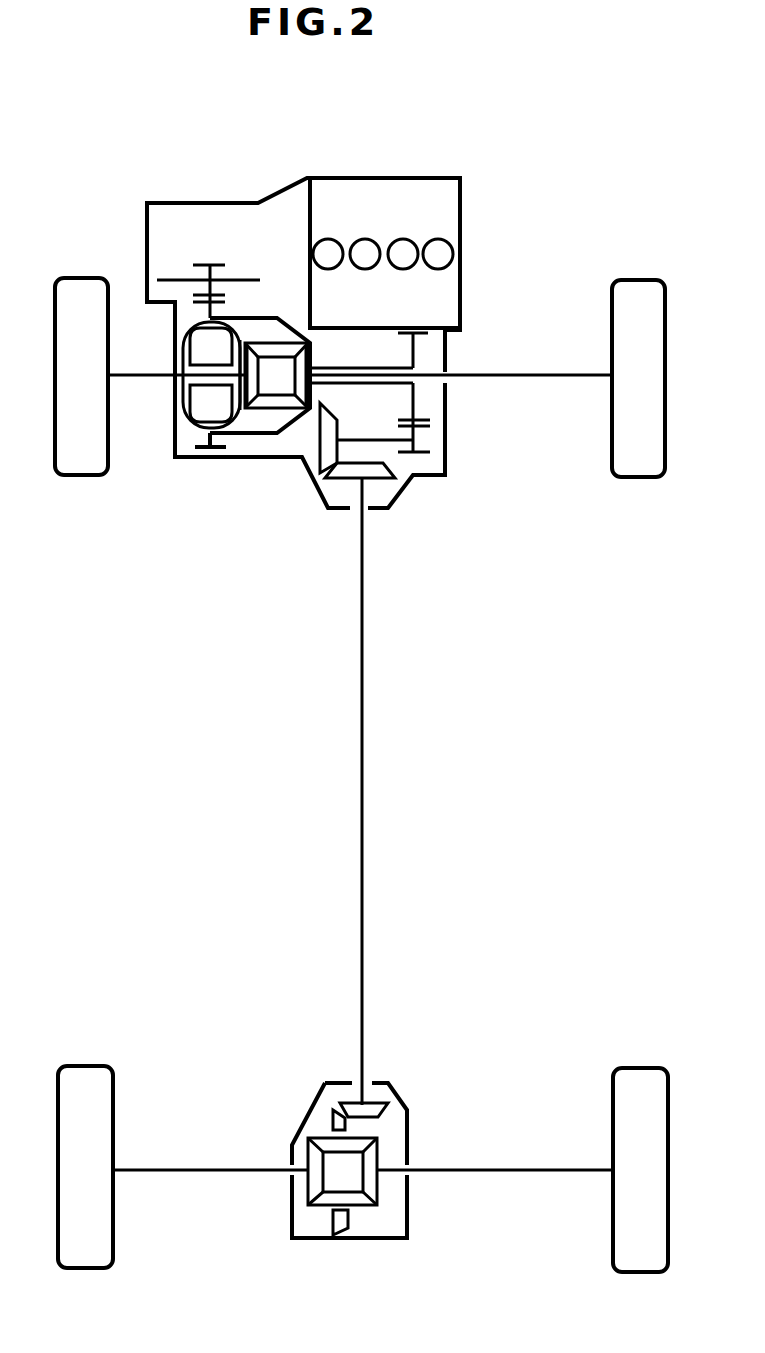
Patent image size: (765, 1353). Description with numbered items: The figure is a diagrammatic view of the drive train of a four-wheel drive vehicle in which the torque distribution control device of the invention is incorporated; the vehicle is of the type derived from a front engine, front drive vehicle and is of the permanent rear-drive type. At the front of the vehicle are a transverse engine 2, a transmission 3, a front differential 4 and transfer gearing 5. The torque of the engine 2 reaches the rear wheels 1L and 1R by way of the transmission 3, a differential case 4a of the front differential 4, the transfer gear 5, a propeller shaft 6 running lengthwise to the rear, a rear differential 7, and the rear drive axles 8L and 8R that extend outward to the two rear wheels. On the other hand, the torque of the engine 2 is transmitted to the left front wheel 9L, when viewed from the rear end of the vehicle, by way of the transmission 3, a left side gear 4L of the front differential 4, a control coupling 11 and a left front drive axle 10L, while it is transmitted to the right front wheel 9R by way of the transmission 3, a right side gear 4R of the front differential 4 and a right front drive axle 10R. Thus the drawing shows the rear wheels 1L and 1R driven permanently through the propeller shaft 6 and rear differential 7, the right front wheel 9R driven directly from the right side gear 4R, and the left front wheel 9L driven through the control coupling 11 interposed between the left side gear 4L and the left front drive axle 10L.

The rear wheel 1L is at (85, 1066).
The rear wheel 1R is at (635, 1068).
The transverse engine 2 is at (407, 197).
The transmission 3 is at (207, 218).
The front differential 4 is at (290, 448).
The left side gear 4L is at (252, 405).
The right side gear 4R is at (338, 372).
The differential case 4a is at (292, 432).
The transfer gearing 5 is at (424, 355).
The propeller shaft 6 is at (363, 727).
The rear differential 7 is at (365, 1210).
The rear drive axle 8L is at (195, 1169).
The rear drive axle 8R is at (505, 1169).
The left front wheel 9L is at (80, 277).
The right front wheel 9R is at (633, 280).
The left front drive axle 10L is at (137, 374).
The right front drive axle 10R is at (533, 378).
The control coupling 11 is at (187, 430).